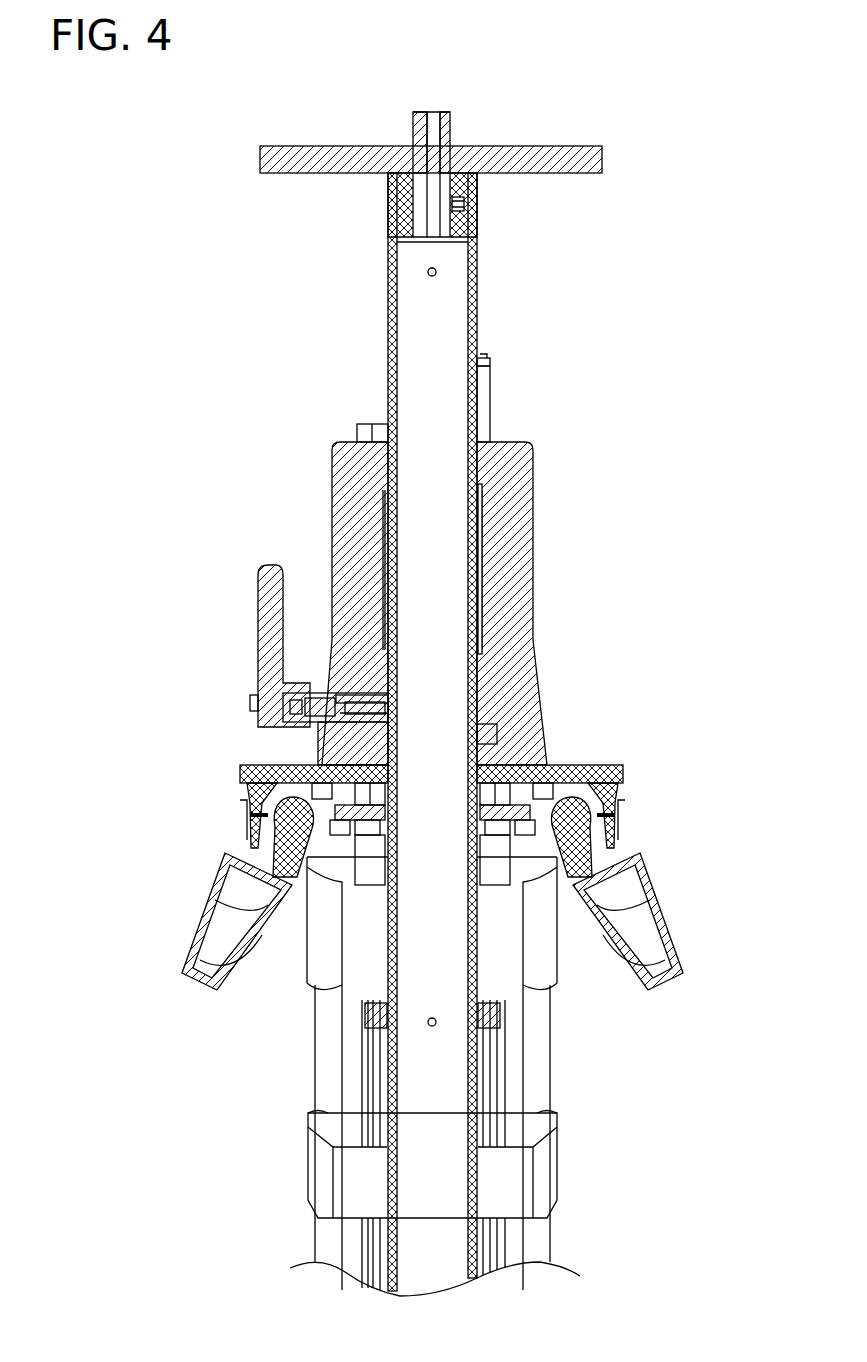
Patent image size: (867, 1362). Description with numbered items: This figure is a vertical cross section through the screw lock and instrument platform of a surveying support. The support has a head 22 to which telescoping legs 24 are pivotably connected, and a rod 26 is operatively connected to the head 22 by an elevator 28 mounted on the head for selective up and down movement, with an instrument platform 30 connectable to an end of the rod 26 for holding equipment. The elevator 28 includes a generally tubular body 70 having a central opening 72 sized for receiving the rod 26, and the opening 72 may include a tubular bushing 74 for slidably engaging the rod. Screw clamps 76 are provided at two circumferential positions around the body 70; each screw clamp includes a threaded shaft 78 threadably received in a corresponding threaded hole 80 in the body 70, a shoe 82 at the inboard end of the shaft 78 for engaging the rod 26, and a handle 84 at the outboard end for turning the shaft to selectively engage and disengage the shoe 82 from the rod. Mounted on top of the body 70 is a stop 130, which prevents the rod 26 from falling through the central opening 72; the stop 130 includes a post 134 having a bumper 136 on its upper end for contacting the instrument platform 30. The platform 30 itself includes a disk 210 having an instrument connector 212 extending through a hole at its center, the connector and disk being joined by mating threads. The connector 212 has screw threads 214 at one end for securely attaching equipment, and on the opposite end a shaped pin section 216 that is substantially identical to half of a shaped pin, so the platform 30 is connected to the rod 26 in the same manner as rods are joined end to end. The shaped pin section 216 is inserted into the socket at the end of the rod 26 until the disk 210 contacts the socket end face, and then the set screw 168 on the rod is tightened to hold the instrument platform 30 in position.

The head 22 is at (641, 765).
The telescoping legs 24 is at (312, 1072).
The rod 26 is at (480, 290).
The elevator 28 is at (541, 478).
The instrument platform 30 is at (456, 145).
The tubular body 70 is at (536, 606).
The central opening 72 is at (385, 466).
The tubular bushing 74 is at (484, 532).
The screw clamps 76 is at (232, 645).
The threaded shaft 78 is at (330, 745).
The threaded hole 80 is at (322, 695).
The shoe 82 is at (388, 703).
The handle 84 is at (258, 586).
The stop 130 is at (572, 388).
The post 134 is at (492, 420).
The bumper 136 is at (484, 356).
The set screw 168 is at (468, 206).
The disk 210 is at (552, 176).
The instrument connector 212 is at (396, 145).
The screw threads 214 is at (457, 145).
The shaped pin section 216 is at (392, 212).